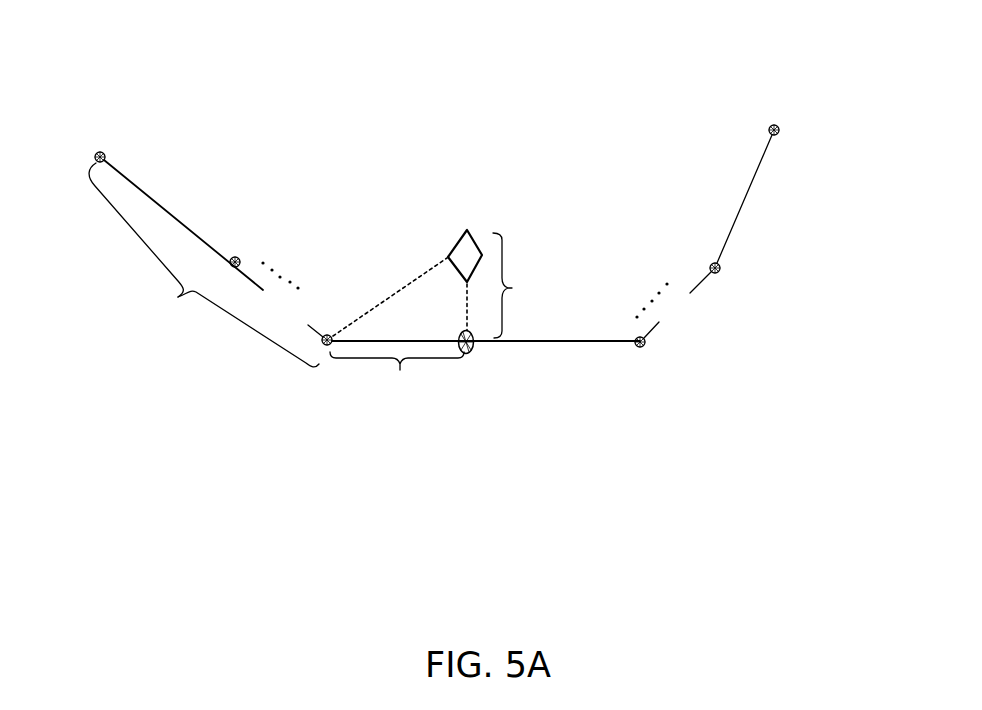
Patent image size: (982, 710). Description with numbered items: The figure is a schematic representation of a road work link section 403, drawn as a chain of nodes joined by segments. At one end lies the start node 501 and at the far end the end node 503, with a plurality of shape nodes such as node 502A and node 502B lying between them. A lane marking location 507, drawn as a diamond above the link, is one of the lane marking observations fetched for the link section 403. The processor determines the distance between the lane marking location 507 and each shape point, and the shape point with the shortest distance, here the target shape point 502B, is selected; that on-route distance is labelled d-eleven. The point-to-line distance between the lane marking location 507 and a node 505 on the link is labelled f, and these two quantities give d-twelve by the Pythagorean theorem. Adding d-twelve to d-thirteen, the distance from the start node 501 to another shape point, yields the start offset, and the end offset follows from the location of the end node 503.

The road work link section 403 is at (662, 63).
The start node 501 is at (98, 152).
The shape node 502A is at (232, 256).
The target shape point 502B is at (326, 335).
The end node 503 is at (776, 136).
The node 505 is at (464, 354).
The lane marking location 507 is at (465, 228).